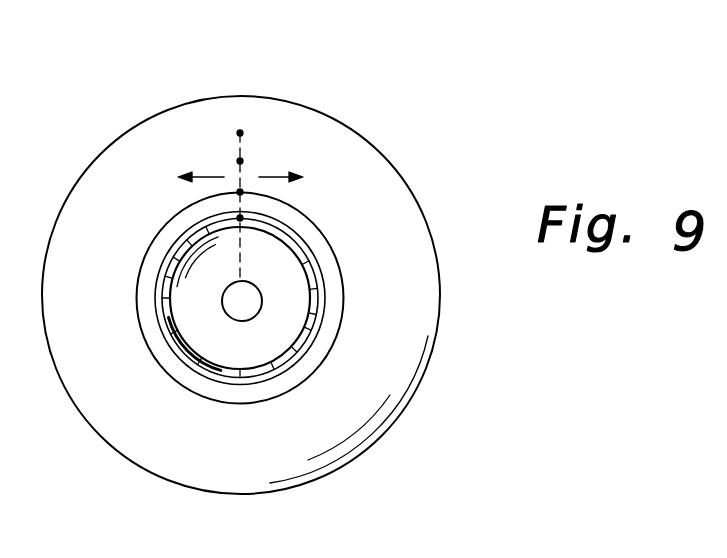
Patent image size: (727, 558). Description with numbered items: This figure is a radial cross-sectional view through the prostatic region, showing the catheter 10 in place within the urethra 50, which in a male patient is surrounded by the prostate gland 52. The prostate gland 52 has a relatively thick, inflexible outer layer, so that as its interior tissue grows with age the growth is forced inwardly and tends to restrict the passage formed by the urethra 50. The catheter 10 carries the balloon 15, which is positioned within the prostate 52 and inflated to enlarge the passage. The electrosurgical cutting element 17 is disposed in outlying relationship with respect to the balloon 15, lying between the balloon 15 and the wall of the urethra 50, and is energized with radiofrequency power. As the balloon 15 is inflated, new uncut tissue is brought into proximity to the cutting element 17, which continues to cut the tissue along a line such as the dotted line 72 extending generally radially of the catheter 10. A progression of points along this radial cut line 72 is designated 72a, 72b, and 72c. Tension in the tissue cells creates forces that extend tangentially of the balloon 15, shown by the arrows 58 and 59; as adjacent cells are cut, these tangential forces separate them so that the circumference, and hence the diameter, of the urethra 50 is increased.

The catheter 10 is at (228, 318).
The balloon 15 is at (300, 364).
The electrosurgical cutting element 17 is at (247, 263).
The urethra 50 is at (340, 322).
The prostate gland 52 is at (338, 180).
The arrow 58 is at (205, 177).
The arrow 59 is at (277, 180).
The dotted line 72 is at (238, 121).
The point 72a is at (240, 220).
The point 72b is at (240, 162).
The point 72c is at (241, 133).